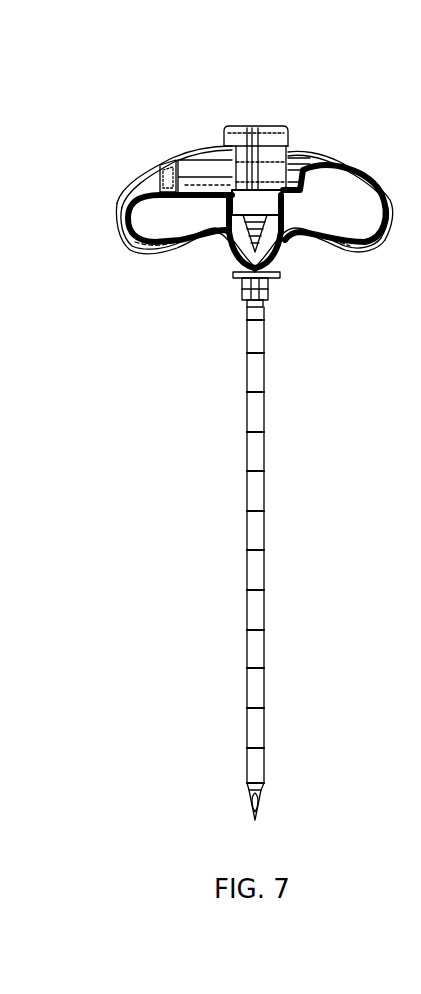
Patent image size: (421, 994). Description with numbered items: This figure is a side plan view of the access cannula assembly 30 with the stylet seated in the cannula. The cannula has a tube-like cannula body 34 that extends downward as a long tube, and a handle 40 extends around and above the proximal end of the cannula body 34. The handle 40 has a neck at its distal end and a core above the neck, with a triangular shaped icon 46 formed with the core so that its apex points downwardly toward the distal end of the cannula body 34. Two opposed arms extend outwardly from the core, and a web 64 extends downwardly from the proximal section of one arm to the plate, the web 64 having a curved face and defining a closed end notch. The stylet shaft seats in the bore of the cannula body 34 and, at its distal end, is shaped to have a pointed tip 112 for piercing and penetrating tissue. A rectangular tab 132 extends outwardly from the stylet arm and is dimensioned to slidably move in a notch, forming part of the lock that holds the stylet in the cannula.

The access cannula assembly 30 is at (118, 110).
The handle 40 is at (356, 254).
The tab 132 is at (160, 183).
The web 64 is at (298, 168).
The triangular shaped icon 46 is at (247, 237).
The cannula body 34 is at (250, 612).
The pointed tip 112 is at (265, 803).